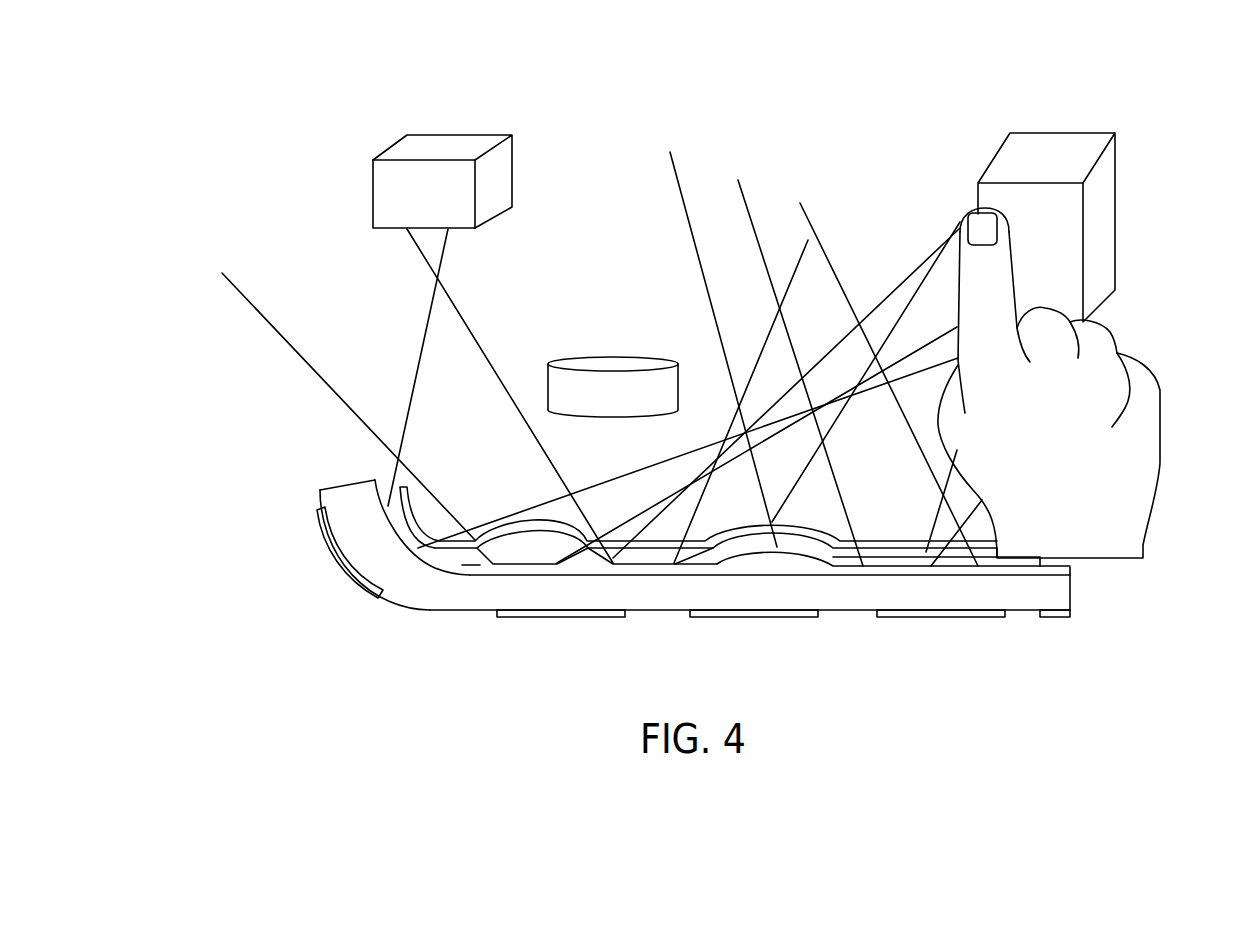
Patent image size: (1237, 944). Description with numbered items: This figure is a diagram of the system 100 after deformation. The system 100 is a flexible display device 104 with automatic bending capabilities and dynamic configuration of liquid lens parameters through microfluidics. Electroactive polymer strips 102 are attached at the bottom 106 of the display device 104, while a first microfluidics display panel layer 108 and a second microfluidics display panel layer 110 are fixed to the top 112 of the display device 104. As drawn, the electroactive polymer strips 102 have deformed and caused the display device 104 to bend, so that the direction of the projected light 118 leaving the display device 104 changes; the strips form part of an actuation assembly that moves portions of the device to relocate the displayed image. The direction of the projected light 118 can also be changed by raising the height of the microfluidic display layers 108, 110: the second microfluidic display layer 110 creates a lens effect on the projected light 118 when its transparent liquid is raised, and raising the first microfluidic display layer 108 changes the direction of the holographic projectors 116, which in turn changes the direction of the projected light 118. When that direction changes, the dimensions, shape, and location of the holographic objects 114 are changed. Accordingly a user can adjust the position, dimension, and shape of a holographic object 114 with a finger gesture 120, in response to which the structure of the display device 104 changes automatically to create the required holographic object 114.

The system 100 is at (212, 161).
The electroactive polymer strips 102 is at (325, 549).
The display device 104 is at (1071, 598).
The bottom of the display device 106 is at (409, 607).
The first microfluidics display panel layer 108 is at (1071, 569).
The second microfluidics display panel layer 110 is at (433, 527).
The top of the display device 112 is at (648, 577).
The holographic objects 114 is at (438, 135).
The holographic projectors 116 is at (658, 562).
The projected light 118 is at (348, 406).
The finger gesture 120 is at (1149, 466).